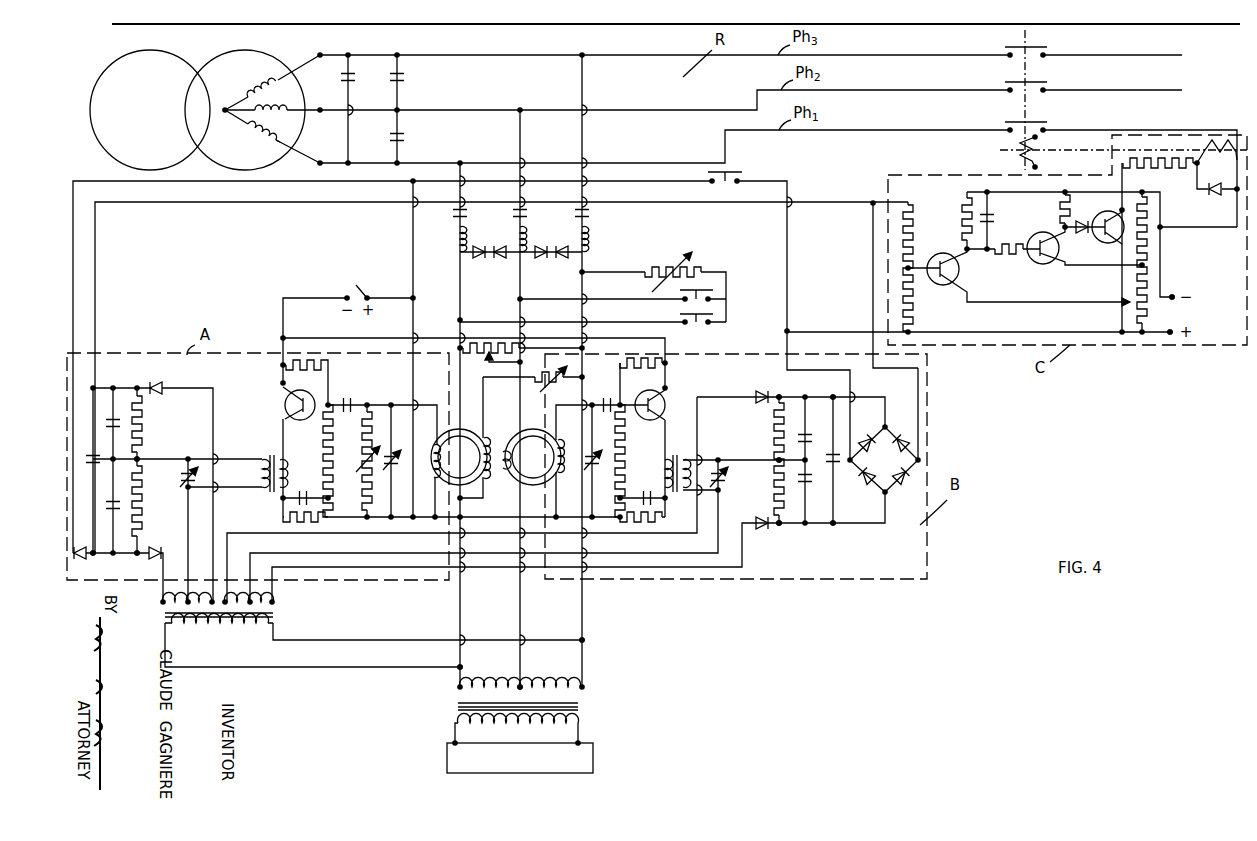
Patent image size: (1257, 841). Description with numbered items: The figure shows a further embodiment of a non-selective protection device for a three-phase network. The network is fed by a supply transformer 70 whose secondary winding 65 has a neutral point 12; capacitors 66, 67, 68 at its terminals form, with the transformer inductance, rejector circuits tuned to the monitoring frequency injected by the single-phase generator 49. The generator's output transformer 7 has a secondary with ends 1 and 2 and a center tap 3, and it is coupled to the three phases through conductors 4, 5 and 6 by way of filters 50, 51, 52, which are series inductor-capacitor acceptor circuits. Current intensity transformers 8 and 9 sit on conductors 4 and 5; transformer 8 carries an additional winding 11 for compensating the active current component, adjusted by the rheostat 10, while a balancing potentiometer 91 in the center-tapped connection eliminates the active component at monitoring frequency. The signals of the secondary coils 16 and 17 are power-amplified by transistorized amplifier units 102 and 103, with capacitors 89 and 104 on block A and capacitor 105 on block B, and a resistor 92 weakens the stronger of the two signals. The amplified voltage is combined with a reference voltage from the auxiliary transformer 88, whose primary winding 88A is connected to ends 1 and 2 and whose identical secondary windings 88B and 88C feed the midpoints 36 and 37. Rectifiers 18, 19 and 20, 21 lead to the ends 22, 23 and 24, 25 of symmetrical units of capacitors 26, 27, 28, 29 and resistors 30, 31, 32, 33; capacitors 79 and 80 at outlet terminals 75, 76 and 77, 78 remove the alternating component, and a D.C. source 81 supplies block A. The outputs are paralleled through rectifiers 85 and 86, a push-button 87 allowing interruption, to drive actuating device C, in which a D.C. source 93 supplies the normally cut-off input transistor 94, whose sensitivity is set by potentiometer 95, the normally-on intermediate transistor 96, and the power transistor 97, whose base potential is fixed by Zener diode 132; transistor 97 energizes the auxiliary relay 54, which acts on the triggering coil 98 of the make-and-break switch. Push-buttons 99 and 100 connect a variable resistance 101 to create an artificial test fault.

The network supply transformer 70 is at (175, 60).
The neutral point 12 is at (234, 102).
The secondary winding 65 is at (294, 128).
The capacitor 66 is at (351, 84).
The capacitor 67 is at (401, 84).
The capacitor 68 is at (405, 135).
The filter 50 is at (453, 213).
The filter 51 is at (513, 213).
The filter 52 is at (575, 213).
The push-button switch 87 is at (715, 186).
The triggering coil 98 is at (1015, 150).
The auxiliary relay 54 is at (1210, 164).
The Zener diode 132 is at (1073, 220).
The input transistor 94 is at (948, 284).
The intermediate-stage transistor 96 is at (1037, 260).
The power transistor 97 is at (1105, 240).
The potentiometer 95 is at (1144, 302).
The D.C. source 93 is at (1183, 319).
The D.C. source 81 is at (368, 290).
The variable resistance 101 is at (646, 272).
The push-button switch 99 is at (680, 305).
The push-button switch 100 is at (698, 325).
The balancing potentiometer 91 is at (503, 342).
The rheostat 10 is at (522, 380).
The transistorized amplifier unit 102 is at (286, 392).
The transistorized amplifier unit 103 is at (665, 395).
The outlet terminal 75 is at (95, 386).
The end 22 is at (137, 386).
The diode 18 is at (164, 386).
The capacitor 26 is at (109, 427).
The resistor 30 is at (143, 409).
The capacitor 79 is at (99, 457).
The midpoint 36 is at (140, 458).
The capacitor 27 is at (109, 507).
The resistor 31 is at (142, 514).
The capacitor 104 is at (180, 474).
The outlet terminal 76 is at (96, 551).
The end 23 is at (140, 551).
The rectifier 85 is at (76, 560).
The diode 19 is at (155, 560).
The coil 16 is at (432, 448).
The current intensity transformer 8 is at (462, 428).
The additional winding 11 is at (484, 448).
The current intensity transformer 9 is at (533, 485).
The coil 17 is at (559, 446).
The resistor 92 is at (363, 475).
The capacitor 89 is at (393, 466).
The diode 20 is at (755, 400).
The end 24 is at (780, 395).
The outlet terminal 77 is at (833, 395).
The resistor 32 is at (774, 434).
The capacitor 28 is at (810, 435).
The capacitor 105 is at (712, 465).
The midpoint 37 is at (777, 465).
The capacitor 29 is at (807, 480).
The resistor 33 is at (771, 496).
The capacitor 80 is at (837, 462).
The rectifier 86 is at (920, 460).
The diode 21 is at (753, 541).
The end 25 is at (778, 538).
The outlet terminal 78 is at (833, 530).
The secondary winding 88B is at (163, 602).
The secondary winding 88C is at (273, 602).
The auxiliary transformer 88 is at (163, 615).
The primary winding 88A is at (244, 627).
The end 1 is at (450, 676).
The end 2 is at (592, 670).
The center tap 3 is at (526, 676).
The conductor 4 is at (525, 632).
The conductor 5 is at (530, 630).
The conductor 6 is at (592, 630).
The output transformer 7 is at (452, 707).
The single-phase generator 49 is at (442, 754).